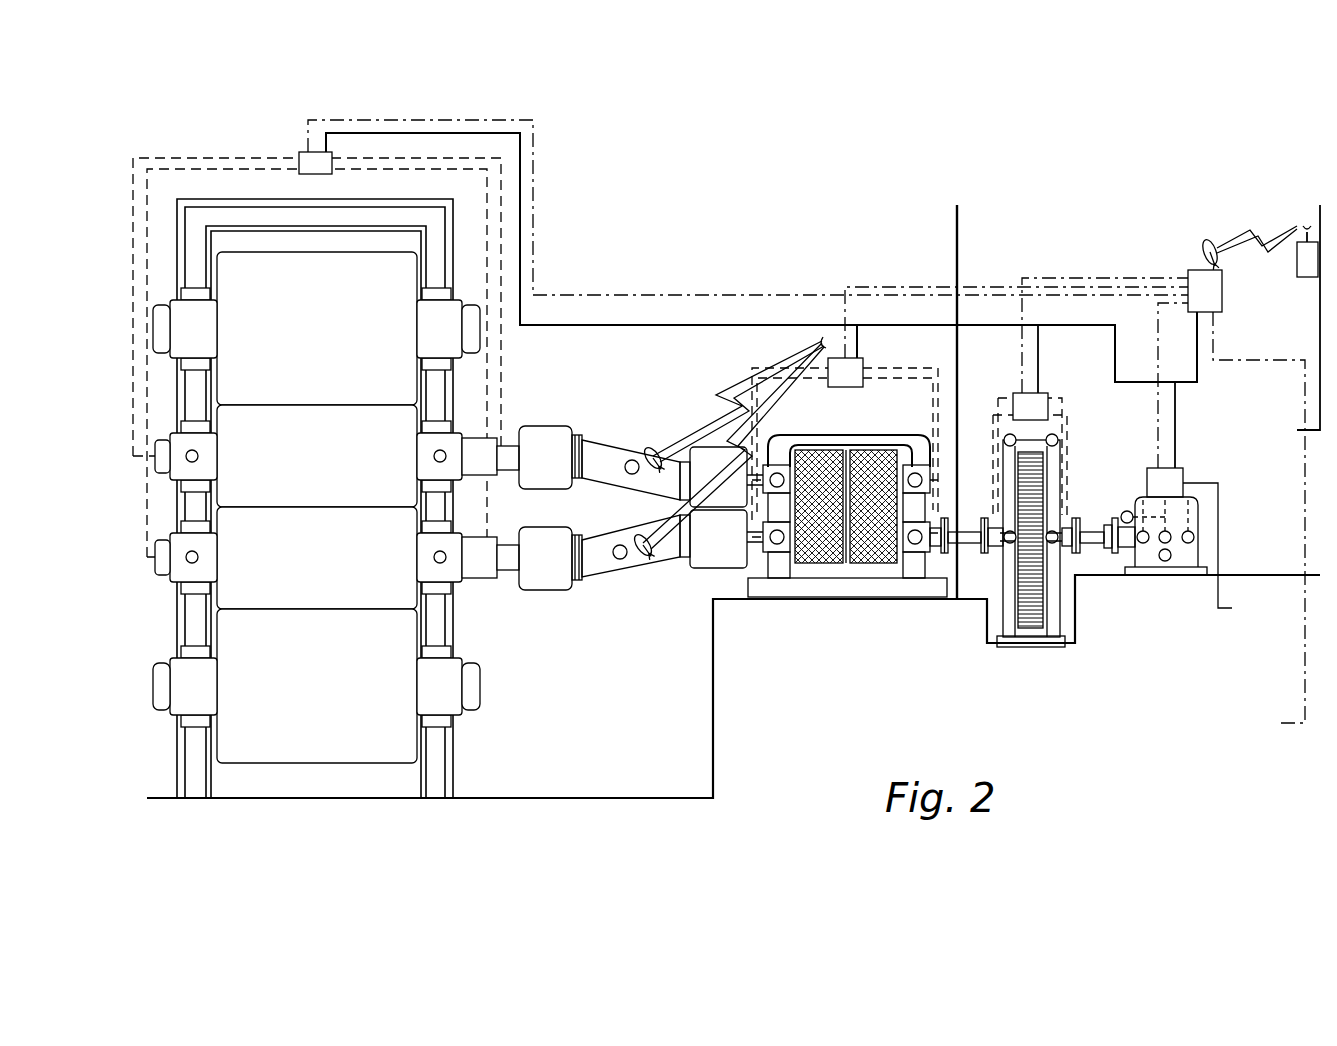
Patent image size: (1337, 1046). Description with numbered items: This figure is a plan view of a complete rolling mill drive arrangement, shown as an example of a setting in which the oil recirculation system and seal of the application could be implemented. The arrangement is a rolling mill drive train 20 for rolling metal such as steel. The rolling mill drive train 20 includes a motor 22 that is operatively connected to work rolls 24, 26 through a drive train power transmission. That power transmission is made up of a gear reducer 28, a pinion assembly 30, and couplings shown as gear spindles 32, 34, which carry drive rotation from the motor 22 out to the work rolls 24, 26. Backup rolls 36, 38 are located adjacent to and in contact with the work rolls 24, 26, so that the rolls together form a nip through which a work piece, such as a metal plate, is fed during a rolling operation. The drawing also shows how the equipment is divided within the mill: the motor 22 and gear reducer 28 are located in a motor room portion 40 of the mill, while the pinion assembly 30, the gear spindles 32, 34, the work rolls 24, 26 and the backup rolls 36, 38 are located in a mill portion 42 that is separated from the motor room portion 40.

The rolling mill drive train 20 is at (933, 97).
The motor 22 is at (1140, 497).
The work roll 24 is at (330, 473).
The work roll 26 is at (330, 573).
The gear reducer 28 is at (985, 608).
The pinion assembly 30 is at (812, 432).
The gear spindle 32 is at (622, 440).
The gear spindle 34 is at (616, 577).
The backup roll 36 is at (330, 352).
The backup roll 38 is at (330, 693).
The motor room portion 40 is at (1060, 188).
The mill portion 42 is at (812, 180).